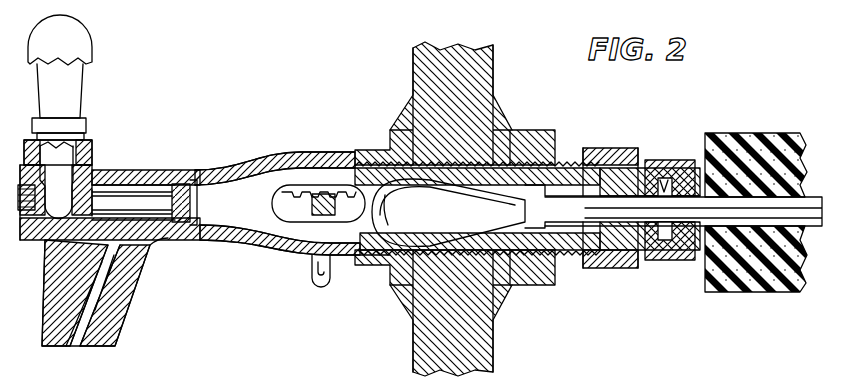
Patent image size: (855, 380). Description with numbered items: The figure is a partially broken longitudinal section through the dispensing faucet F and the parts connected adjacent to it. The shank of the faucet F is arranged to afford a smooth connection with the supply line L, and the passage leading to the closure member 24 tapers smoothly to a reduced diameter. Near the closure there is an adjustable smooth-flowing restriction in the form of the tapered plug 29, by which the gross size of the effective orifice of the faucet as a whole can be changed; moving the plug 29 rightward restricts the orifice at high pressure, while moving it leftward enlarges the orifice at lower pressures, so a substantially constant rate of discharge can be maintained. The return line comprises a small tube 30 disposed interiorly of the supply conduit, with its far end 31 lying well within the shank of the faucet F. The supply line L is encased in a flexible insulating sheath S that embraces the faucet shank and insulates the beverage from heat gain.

The faucet F is at (138, 175).
The closure member 24 is at (185, 184).
The tapered plug 29 is at (490, 158).
The small tube 30 is at (700, 212).
The far end 31 is at (548, 213).
The flexible insulating sheath S is at (800, 134).
The supply line L is at (812, 188).